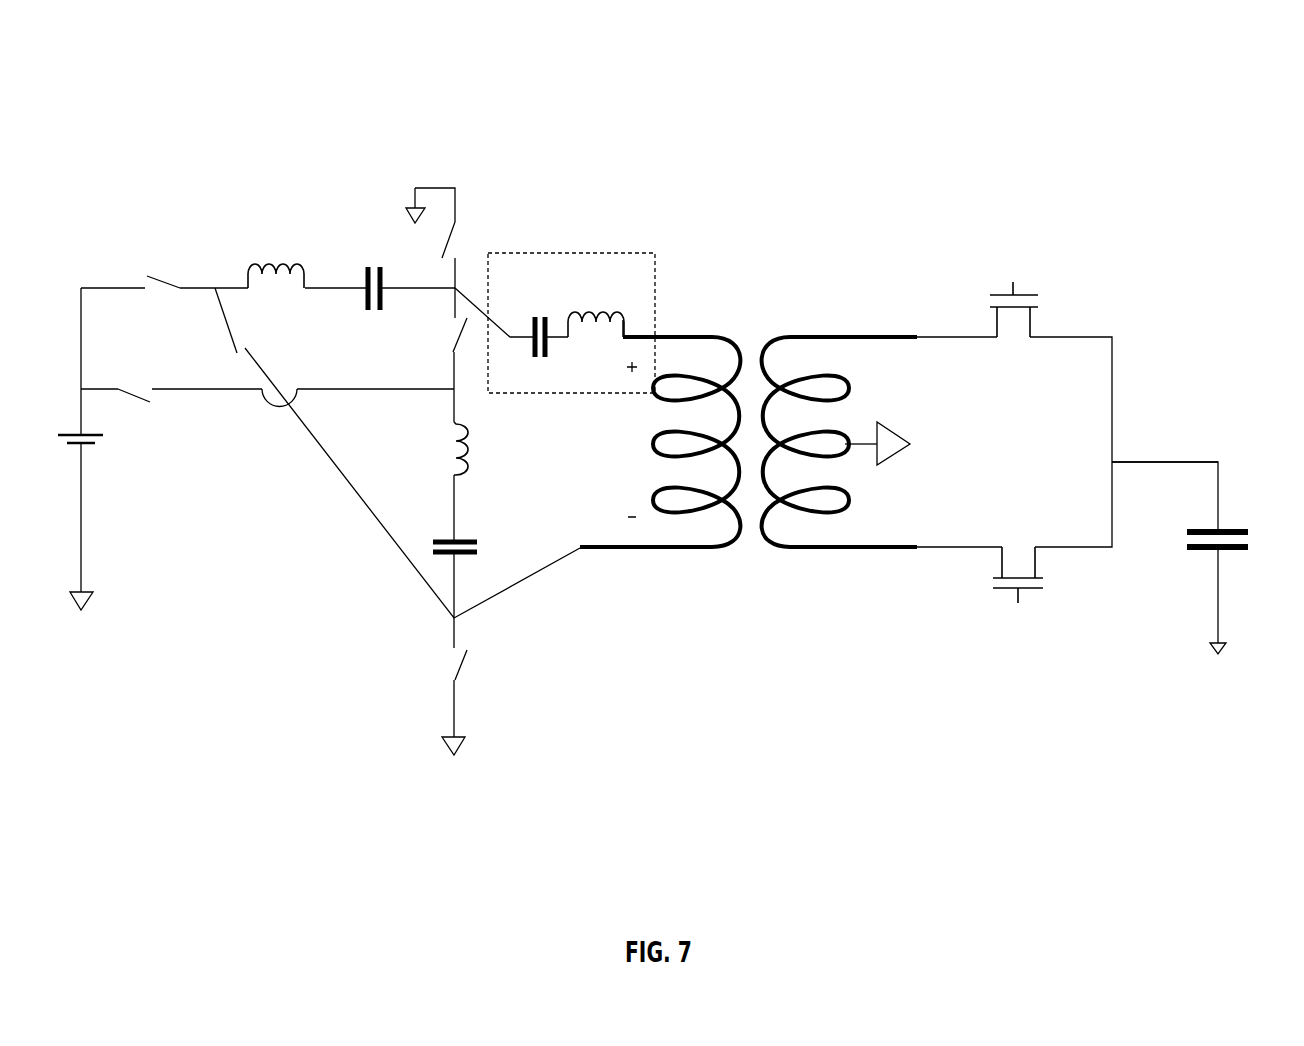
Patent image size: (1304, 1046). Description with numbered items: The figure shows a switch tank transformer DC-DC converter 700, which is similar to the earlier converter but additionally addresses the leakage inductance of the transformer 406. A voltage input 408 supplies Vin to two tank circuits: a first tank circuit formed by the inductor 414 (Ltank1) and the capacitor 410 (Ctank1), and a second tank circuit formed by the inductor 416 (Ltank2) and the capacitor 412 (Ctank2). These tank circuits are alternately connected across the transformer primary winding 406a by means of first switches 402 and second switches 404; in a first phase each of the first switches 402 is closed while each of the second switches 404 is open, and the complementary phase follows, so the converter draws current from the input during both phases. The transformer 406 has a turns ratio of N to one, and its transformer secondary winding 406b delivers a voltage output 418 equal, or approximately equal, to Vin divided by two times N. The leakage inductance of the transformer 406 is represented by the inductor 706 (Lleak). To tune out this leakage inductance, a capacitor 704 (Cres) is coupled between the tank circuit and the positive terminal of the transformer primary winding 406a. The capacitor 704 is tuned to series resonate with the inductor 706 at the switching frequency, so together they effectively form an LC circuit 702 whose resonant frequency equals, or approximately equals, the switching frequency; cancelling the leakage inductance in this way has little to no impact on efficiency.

The switch tank transformer DC-DC converter 700 is at (855, 100).
The first switches 402 is at (172, 282).
The second switches 404 is at (133, 395).
The transformer 406 is at (748, 471).
The transformer primary winding 406a is at (660, 442).
The transformer secondary winding 406b is at (839, 442).
The voltage input 408 is at (167, 492).
The capacitor (Ctank1) 410 is at (420, 264).
The capacitor (Ctank2) 412 is at (573, 549).
The inductor (Ltank1) 414 is at (317, 256).
The inductor (Ltank2) 416 is at (573, 466).
The voltage output 418 is at (1210, 452).
The LC circuit 702 is at (655, 290).
The capacitor (Cres) 704 is at (608, 391).
The inductor (Lleak) 706 is at (618, 307).